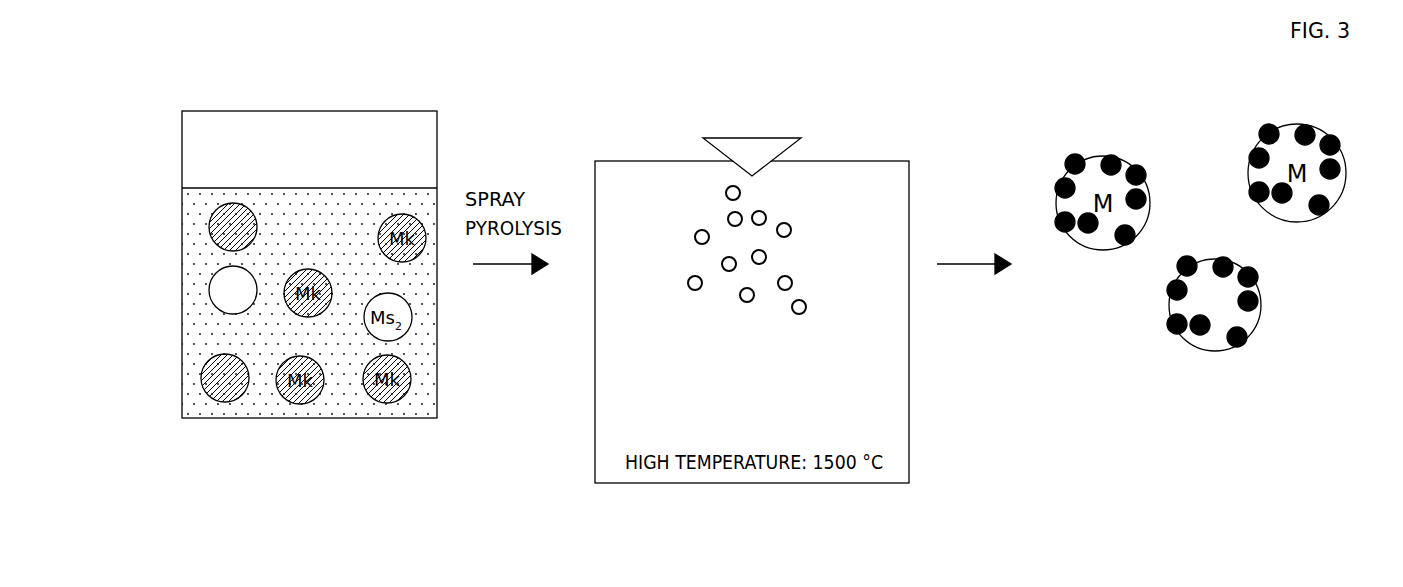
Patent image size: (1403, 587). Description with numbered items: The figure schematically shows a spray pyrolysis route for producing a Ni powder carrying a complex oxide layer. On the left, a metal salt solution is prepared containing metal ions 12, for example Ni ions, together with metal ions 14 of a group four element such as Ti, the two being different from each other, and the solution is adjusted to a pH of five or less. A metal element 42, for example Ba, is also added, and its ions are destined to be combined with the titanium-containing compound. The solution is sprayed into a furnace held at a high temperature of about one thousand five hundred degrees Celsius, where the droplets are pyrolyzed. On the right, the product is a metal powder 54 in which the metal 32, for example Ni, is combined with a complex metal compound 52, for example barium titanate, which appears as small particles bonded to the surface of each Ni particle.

The metal ions 12 is at (209, 227).
The metal element 42 is at (209, 290).
The metal ions 14 is at (201, 381).
The metal 32 is at (1176, 303).
The complex metal compound 52 is at (1175, 325).
The metal powder 54 is at (1186, 329).